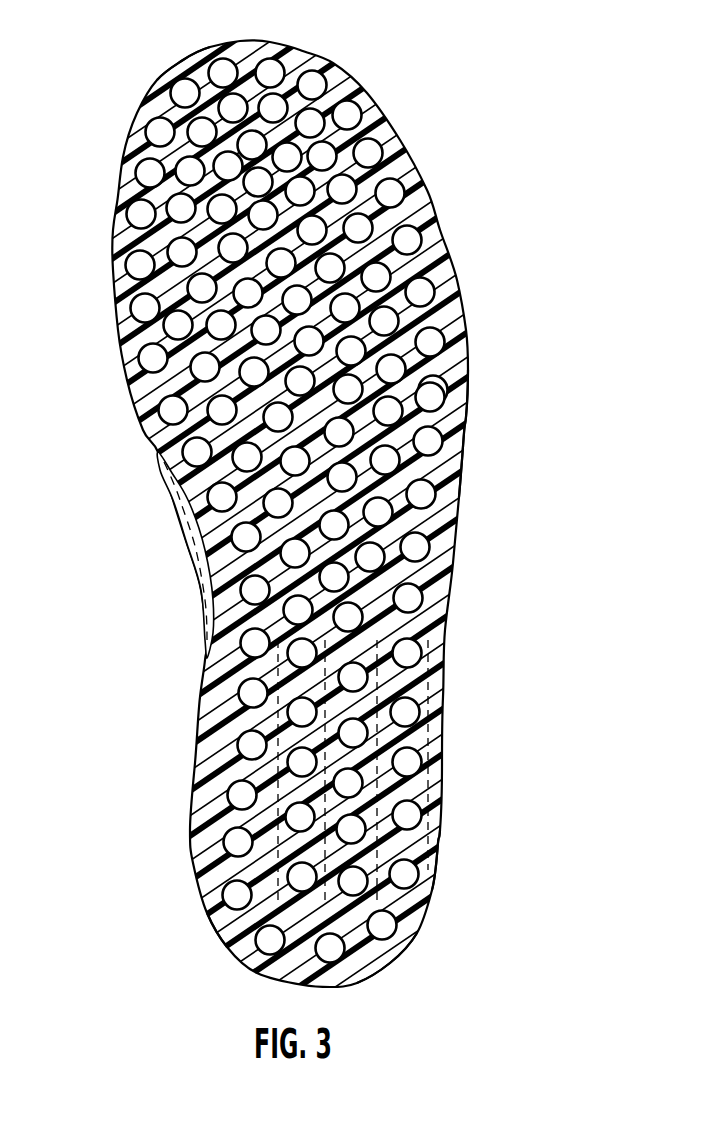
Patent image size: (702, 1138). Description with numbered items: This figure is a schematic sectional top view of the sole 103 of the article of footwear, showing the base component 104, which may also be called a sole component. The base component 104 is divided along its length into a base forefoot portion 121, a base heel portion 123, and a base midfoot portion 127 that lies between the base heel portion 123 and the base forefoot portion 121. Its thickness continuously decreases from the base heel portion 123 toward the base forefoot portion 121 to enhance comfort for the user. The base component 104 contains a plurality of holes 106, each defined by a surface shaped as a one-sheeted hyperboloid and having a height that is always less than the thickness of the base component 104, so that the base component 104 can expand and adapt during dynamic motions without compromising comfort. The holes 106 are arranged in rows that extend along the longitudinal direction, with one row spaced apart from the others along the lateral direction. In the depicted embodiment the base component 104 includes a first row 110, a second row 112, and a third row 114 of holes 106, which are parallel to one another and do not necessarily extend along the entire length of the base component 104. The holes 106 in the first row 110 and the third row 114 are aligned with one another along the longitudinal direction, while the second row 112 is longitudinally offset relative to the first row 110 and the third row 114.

The sole 103 is at (352, 60).
The base component 104 is at (463, 433).
The holes 106 is at (270, 70).
The first row 110 is at (217, 932).
The second row 112 is at (448, 742).
The third row 114 is at (445, 845).
The base forefoot portion 121 is at (190, 68).
The base heel portion 123 is at (397, 950).
The base midfoot portion 127 is at (200, 558).